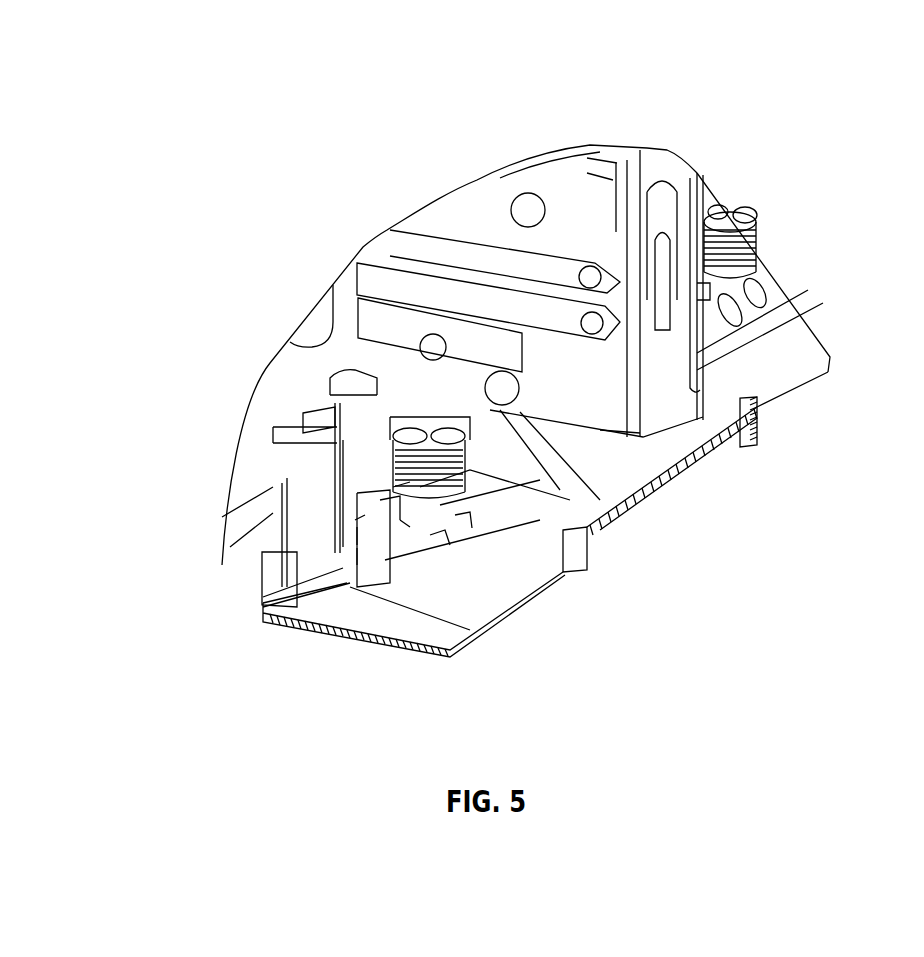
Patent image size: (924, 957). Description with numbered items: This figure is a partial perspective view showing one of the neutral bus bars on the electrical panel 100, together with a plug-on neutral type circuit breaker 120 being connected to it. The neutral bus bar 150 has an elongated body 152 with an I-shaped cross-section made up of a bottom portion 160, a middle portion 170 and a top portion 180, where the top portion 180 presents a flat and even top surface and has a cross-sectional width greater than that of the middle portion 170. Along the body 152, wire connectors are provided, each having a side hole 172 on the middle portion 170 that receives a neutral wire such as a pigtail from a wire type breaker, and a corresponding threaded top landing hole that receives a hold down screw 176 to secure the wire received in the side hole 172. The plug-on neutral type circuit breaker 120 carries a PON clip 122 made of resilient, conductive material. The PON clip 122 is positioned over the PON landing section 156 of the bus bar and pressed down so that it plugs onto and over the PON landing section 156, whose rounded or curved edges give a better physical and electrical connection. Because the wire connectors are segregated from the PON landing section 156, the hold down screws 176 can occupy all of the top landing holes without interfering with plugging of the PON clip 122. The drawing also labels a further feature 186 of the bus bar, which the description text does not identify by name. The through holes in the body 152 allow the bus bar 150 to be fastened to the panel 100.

The electrical panel 100 is at (297, 180).
The plug-on neutral type circuit breaker 120 is at (528, 180).
The PON clip 122 is at (505, 487).
The neutral bus bar 150 is at (387, 583).
The elongated body 152 is at (380, 575).
The PON landing section 156 is at (705, 290).
The bottom portion 160 is at (347, 583).
The middle portion 170 is at (350, 553).
The side hole 172 is at (460, 523).
The hold down screw 176 is at (737, 217).
The top portion 180 is at (352, 527).
The contact jaw 186 is at (353, 523).